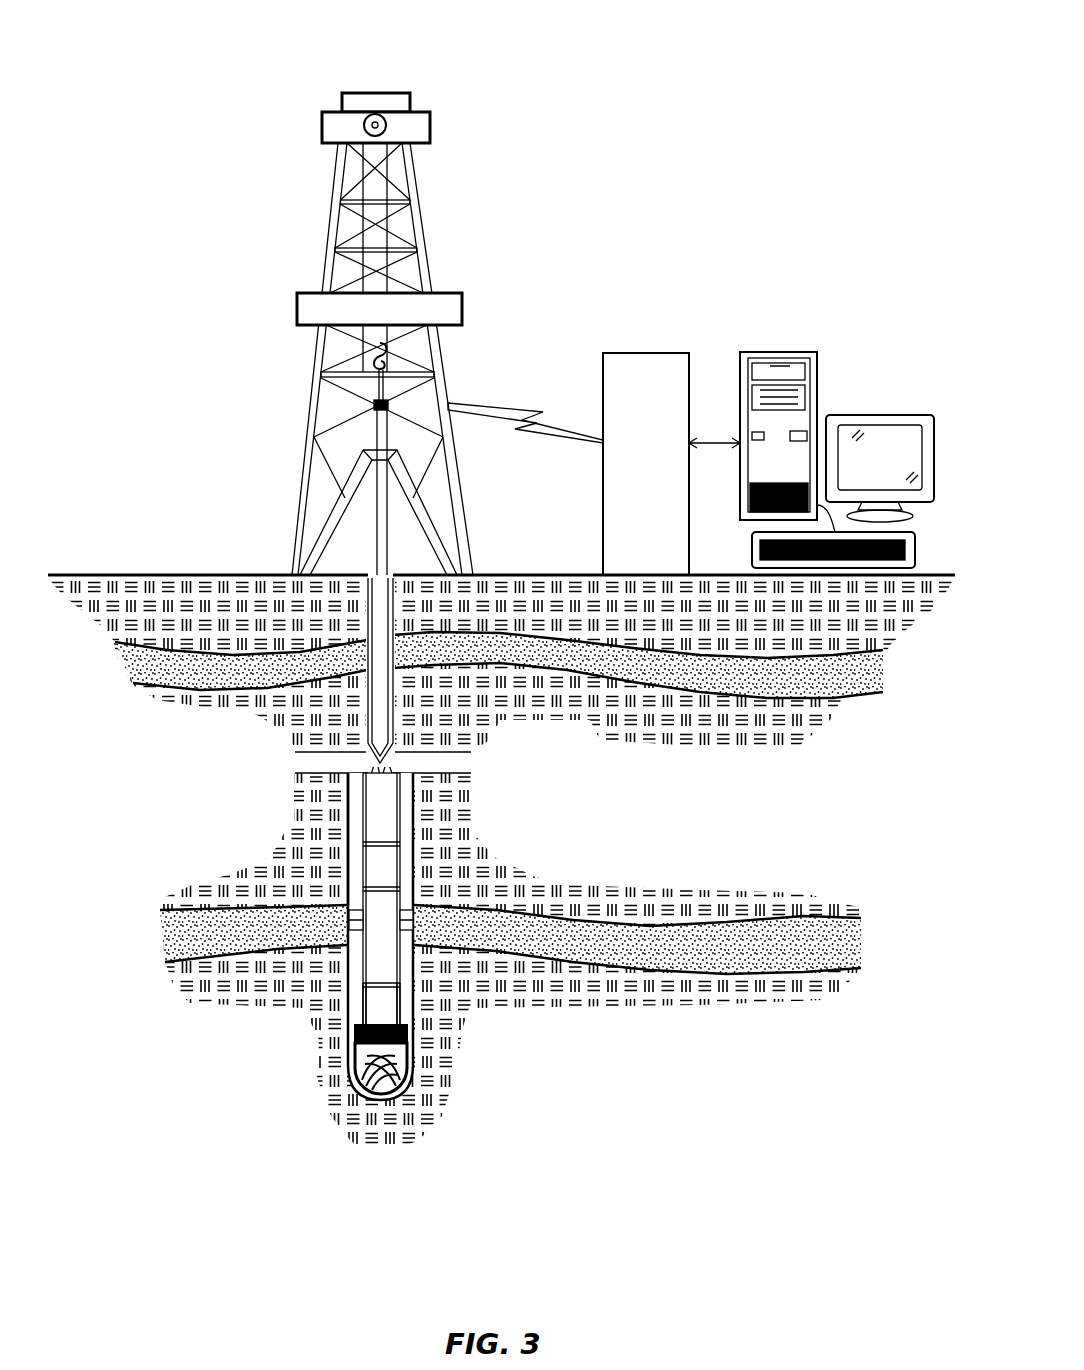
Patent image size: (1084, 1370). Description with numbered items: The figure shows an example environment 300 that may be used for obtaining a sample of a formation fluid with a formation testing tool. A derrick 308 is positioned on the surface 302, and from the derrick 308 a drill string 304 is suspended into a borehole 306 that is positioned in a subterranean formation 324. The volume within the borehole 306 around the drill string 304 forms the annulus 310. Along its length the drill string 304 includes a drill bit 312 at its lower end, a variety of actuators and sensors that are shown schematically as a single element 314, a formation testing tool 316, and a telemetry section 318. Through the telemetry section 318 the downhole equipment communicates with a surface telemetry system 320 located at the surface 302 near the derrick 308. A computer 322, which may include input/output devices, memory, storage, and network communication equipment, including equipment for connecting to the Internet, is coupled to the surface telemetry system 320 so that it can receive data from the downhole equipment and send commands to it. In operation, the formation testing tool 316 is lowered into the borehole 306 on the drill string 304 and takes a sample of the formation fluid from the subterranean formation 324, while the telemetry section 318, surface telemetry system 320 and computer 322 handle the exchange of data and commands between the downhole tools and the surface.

The environment 300 is at (500, 574).
The surface 302 is at (125, 575).
The drill string 304 is at (360, 432).
The borehole 306 is at (390, 573).
The derrick 308 is at (322, 124).
The annulus 310 is at (405, 878).
The drill bit 312 is at (417, 1058).
The actuators and sensors 314 is at (360, 1005).
The formation testing tool 316 is at (400, 965).
The telemetry section 318 is at (360, 867).
The surface telemetry system 320 is at (670, 479).
The computer 322 is at (937, 337).
The subterranean formation 324 is at (458, 719).